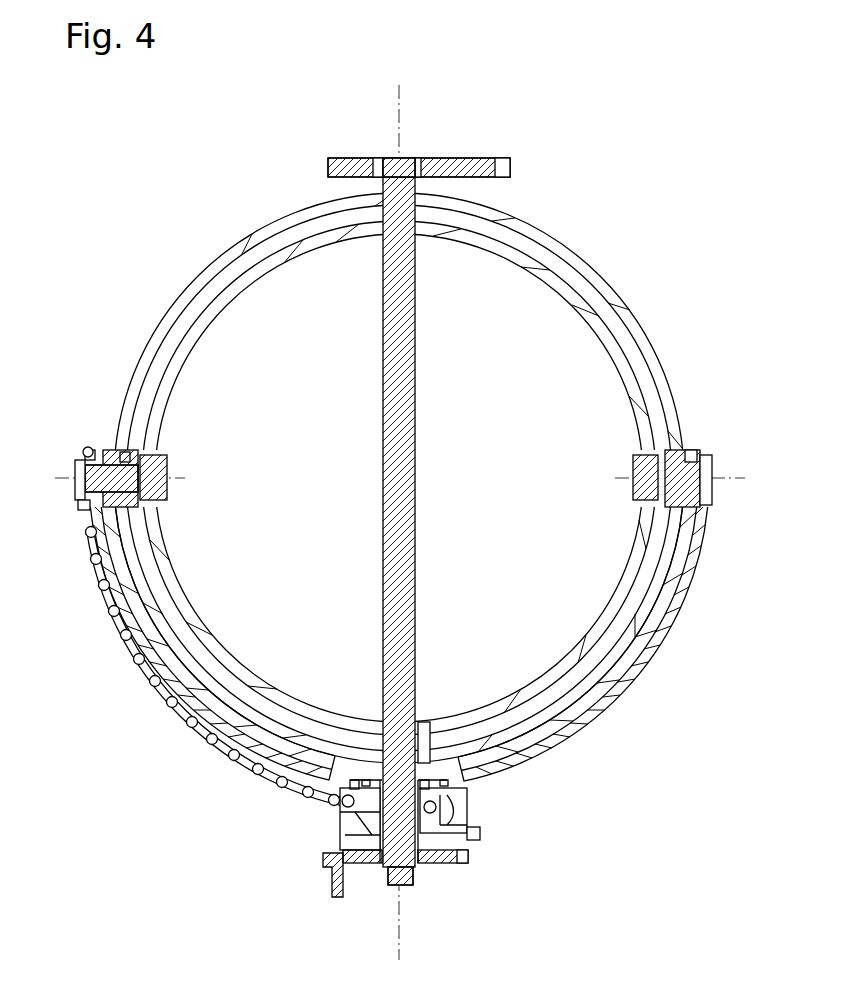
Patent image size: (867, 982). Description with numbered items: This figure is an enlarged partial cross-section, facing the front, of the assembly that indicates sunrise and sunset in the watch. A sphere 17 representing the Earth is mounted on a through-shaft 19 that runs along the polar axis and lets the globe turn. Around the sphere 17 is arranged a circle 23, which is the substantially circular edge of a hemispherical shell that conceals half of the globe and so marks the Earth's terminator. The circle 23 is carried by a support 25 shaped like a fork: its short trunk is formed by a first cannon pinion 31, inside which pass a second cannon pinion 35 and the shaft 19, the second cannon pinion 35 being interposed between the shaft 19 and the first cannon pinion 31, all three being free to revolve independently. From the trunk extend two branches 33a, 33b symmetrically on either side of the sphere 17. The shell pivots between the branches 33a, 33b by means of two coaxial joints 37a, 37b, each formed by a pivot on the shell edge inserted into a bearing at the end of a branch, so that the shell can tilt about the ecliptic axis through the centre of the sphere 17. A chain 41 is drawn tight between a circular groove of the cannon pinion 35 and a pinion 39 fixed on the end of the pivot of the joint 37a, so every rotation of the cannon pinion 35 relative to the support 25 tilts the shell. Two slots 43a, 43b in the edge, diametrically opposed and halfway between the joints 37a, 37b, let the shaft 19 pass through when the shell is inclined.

The sphere 17 is at (280, 262).
The through-shaft 19 is at (412, 463).
The circle 23 is at (200, 275).
The support 25 is at (494, 801).
The first cannon pinion 31 is at (338, 829).
The branch 33a is at (200, 725).
The branch 33b is at (637, 675).
The second cannon pinion 35 is at (418, 871).
The joint 37a is at (108, 436).
The joint 37b is at (693, 438).
The pinion 39 is at (85, 506).
The chain 41 is at (133, 653).
The slot 43a is at (423, 177).
The slot 43b is at (441, 717).